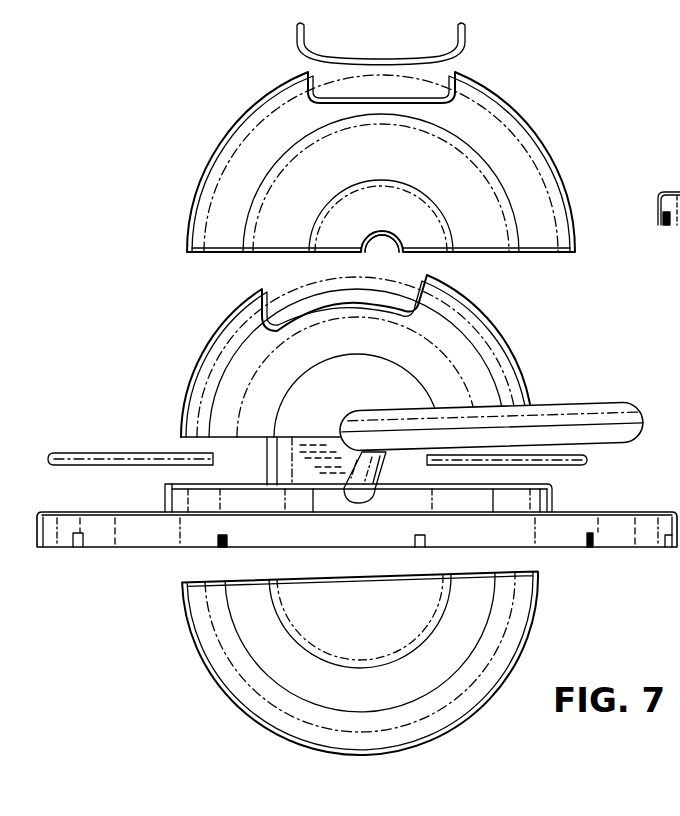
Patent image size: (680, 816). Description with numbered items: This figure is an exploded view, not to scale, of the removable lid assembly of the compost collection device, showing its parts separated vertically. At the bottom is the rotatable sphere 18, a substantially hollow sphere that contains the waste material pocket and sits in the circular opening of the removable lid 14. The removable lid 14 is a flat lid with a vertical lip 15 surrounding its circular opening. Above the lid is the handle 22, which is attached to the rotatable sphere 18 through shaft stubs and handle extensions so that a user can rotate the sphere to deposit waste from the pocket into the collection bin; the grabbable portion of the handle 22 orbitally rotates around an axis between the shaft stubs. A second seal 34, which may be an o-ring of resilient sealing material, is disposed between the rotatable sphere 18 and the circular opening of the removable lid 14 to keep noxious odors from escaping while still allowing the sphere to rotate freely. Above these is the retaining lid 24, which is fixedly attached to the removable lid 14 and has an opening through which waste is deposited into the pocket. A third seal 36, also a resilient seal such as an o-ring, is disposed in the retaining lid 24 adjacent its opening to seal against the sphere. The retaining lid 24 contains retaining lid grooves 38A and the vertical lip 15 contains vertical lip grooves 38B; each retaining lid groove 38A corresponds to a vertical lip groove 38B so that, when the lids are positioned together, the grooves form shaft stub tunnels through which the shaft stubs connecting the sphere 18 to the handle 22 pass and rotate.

The removable lid 14 is at (563, 535).
The vertical lip 15 is at (177, 503).
The rotatable sphere 18 is at (227, 655).
The handle 22 is at (580, 408).
The retaining lid 24 is at (242, 142).
The second seal 34 is at (143, 458).
The third seal 36 is at (463, 45).
The retaining lid groove 38A is at (378, 233).
The vertical lip groove 38B is at (358, 503).